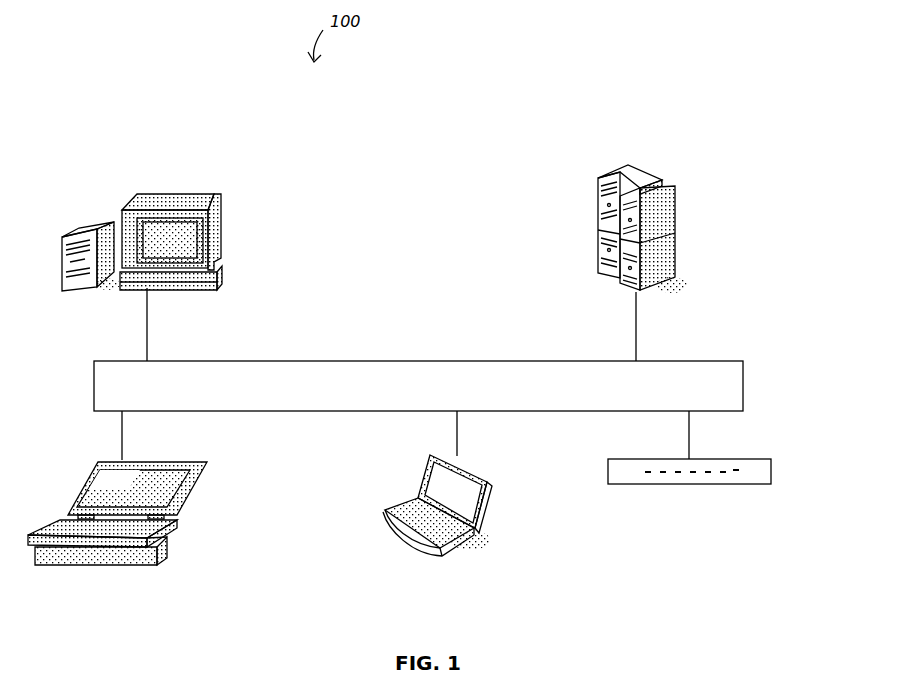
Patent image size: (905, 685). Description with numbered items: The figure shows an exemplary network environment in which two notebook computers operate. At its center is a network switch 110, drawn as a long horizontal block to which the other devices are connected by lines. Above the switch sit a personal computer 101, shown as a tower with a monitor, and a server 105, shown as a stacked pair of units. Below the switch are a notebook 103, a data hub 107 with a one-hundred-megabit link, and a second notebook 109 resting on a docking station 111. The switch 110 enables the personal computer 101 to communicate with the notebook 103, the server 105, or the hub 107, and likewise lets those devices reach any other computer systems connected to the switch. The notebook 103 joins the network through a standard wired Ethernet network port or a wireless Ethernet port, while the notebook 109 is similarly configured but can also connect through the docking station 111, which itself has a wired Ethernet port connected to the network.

The personal computer 101 is at (197, 193).
The notebook 103 is at (490, 503).
The server 105 is at (675, 190).
The data hub 107 is at (760, 458).
The notebook 109 is at (193, 483).
The network switch 110 is at (727, 362).
The docking station 111 is at (158, 555).